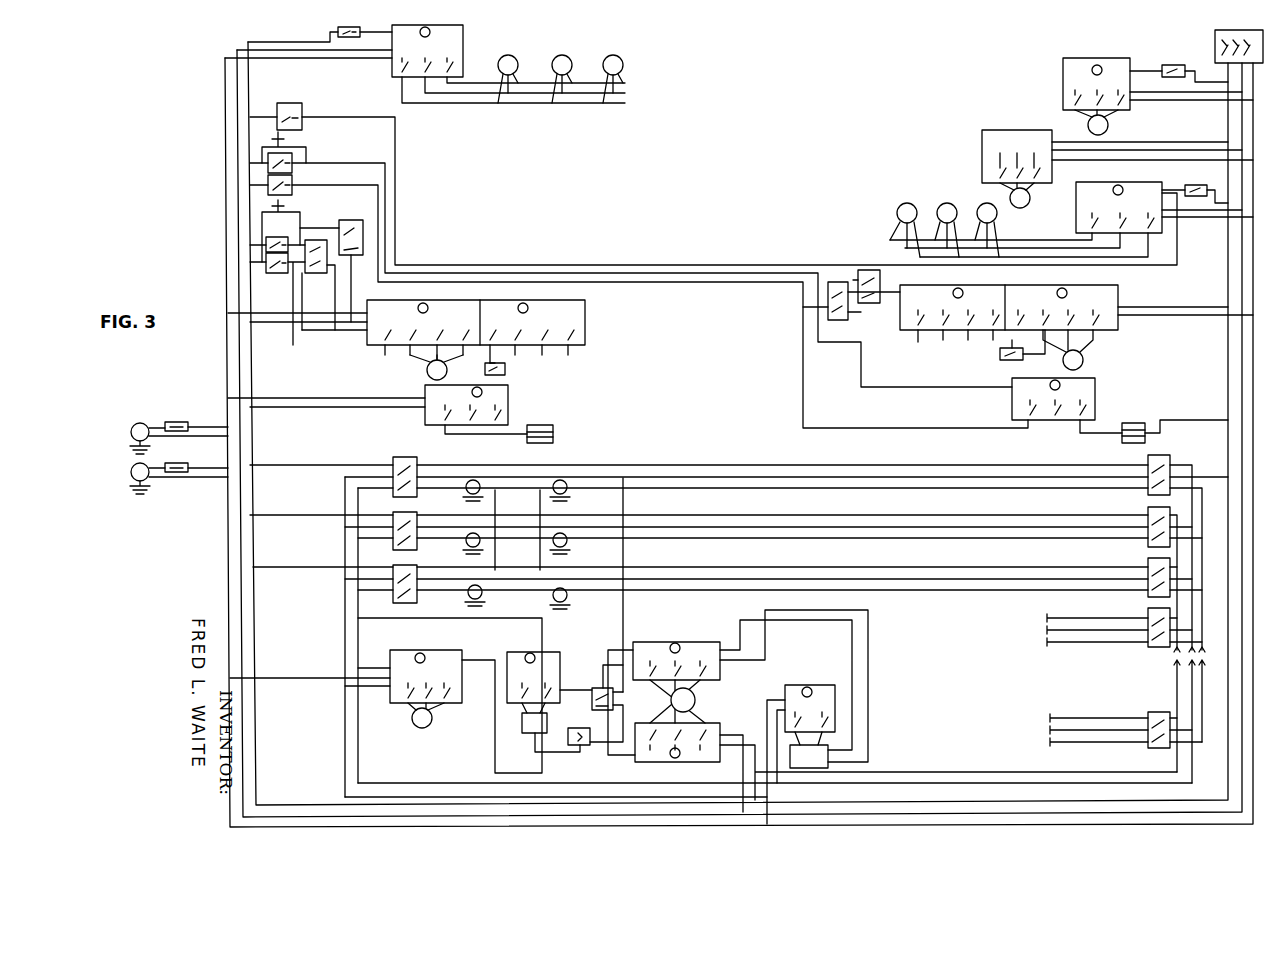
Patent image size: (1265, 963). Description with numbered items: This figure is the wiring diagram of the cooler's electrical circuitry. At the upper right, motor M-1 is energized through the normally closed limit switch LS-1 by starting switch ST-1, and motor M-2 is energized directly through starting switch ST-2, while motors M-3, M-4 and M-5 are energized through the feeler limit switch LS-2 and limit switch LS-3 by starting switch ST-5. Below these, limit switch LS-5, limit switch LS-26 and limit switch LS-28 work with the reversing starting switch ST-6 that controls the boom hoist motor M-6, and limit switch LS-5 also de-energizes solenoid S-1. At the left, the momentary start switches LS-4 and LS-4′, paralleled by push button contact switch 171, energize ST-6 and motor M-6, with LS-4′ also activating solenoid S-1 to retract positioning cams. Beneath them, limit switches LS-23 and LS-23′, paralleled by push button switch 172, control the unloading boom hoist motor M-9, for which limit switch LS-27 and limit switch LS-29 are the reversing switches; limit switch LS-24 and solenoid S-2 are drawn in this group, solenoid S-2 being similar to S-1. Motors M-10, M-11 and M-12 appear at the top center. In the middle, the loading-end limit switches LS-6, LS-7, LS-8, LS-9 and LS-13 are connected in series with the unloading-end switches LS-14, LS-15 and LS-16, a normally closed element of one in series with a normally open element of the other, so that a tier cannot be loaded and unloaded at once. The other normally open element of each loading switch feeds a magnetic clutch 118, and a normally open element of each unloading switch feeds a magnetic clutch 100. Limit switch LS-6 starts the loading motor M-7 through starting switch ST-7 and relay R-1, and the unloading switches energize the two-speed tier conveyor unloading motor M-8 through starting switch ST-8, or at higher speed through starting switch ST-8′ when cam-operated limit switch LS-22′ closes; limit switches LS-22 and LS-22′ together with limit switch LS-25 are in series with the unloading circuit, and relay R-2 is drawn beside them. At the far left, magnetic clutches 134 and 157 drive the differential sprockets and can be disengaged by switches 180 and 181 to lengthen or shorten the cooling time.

The limit switch LS-25 is at (338, 30).
The motor M-10 is at (525, 47).
The motor M-11 is at (570, 47).
The motor M-12 is at (628, 47).
The limit switch LS-3 is at (305, 102).
The momentary push button contact switch 171 is at (270, 139).
The limit switch LS-4 is at (292, 163).
The limit switch LS-4′ is at (268, 185).
The push button switch 172 is at (272, 208).
The limit switch LS-27 is at (358, 212).
The limit switch LS-23 is at (266, 244).
The limit switch LS-23′ is at (266, 265).
The limit switch LS-24 is at (332, 272).
The unloading boom hoist motor M-9 is at (427, 370).
The limit switch LS-29 is at (505, 370).
The solenoid S-2 is at (590, 414).
The magnetic clutch 134 is at (132, 428).
The switch 180 is at (190, 412).
The magnetic clutch 157 is at (131, 471).
The switch 181 is at (198, 452).
The limit switch LS-14 is at (393, 460).
The limit switch LS-15 is at (393, 515).
The limit switch LS-16 is at (393, 567).
The magnetic clutch 100 is at (472, 596).
The magnetic clutch 118 is at (573, 595).
The starting switch ST-7 is at (430, 640).
The loading motor M-7 is at (420, 728).
The relay R-1 is at (595, 640).
The limit switch LS-22 is at (612, 670).
The limit switch LS-22′ is at (525, 723).
The motor starting switch ST-8 is at (682, 646).
The tier conveyor unloading motor M-8 is at (730, 703).
The motor starting switch ST-8′ is at (652, 762).
The relay R-2 is at (822, 675).
The starting switch ST-1 is at (1063, 62).
The limit switch LS-1 is at (1173, 63).
The motor M-1 is at (1110, 129).
The starting switch ST-2 is at (989, 136).
The motor M-2 is at (1065, 206).
The motor M-3 is at (905, 202).
The motor M-4 is at (943, 202).
The motor M-5 is at (983, 202).
The starting switch ST-5 is at (1120, 185).
The limit switch LS-2 is at (1193, 185).
The limit switch LS-5 is at (830, 280).
The limit switch LS-26 is at (868, 270).
The reversing starting switch ST-6 is at (1118, 297).
The limit switch LS-28 is at (1000, 354).
The boom hoist motor M-6 is at (1085, 362).
The solenoid S-1 is at (1145, 432).
The limit switch LS-6 is at (1208, 450).
The limit switch LS-7 is at (1148, 515).
The limit switch LS-8 is at (1148, 567).
The limit switch LS-9 is at (1148, 618).
The limit switch LS-13 is at (1148, 718).